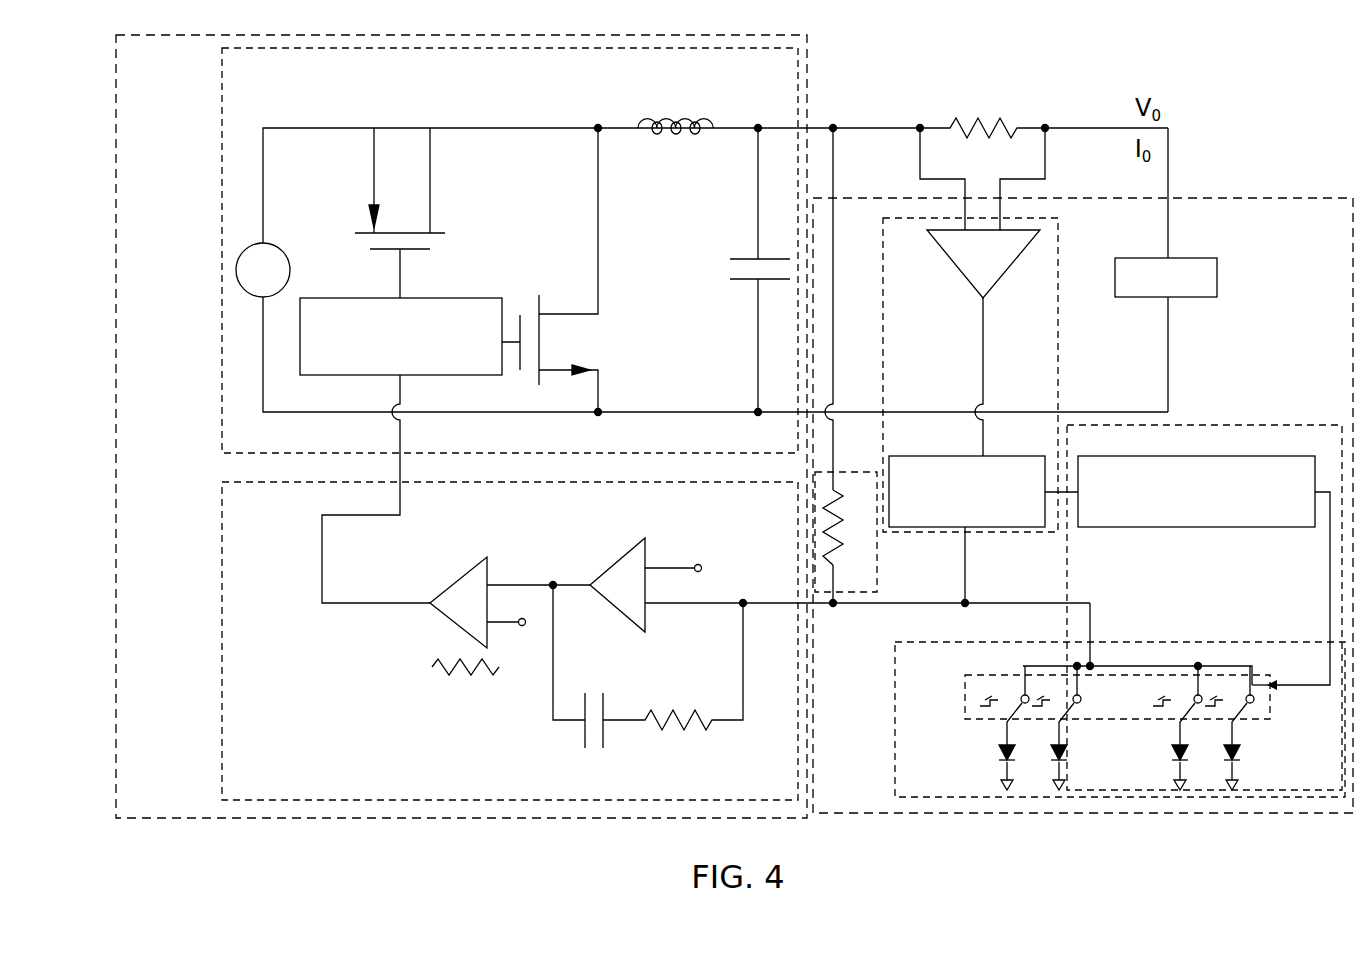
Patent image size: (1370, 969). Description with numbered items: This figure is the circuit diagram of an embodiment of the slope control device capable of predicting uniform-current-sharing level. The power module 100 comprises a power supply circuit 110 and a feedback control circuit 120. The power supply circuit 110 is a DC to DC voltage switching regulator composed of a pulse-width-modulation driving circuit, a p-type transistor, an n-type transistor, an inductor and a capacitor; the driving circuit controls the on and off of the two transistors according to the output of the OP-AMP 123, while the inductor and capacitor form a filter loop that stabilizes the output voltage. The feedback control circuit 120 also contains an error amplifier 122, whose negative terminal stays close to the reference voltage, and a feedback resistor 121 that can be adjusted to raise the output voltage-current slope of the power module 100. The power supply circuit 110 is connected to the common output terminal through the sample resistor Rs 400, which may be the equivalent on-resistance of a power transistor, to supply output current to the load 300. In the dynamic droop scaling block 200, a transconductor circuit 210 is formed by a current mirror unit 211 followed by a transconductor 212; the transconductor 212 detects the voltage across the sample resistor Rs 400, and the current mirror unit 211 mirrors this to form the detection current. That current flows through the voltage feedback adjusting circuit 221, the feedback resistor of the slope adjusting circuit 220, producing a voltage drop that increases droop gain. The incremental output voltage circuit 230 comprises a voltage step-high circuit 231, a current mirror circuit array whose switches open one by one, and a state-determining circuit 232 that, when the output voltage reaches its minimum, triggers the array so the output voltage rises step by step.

The power module 100 is at (114, 126).
The power supply circuit 110 is at (222, 252).
The feedback control circuit 120 is at (222, 636).
The feedback resistor 121 is at (690, 722).
The error amplifier 122 is at (613, 572).
The OP-AMP 123 is at (463, 584).
The dynamic droop scaling block 200 is at (1283, 198).
The transconductor circuit 210 is at (1058, 348).
The current mirror unit 211 is at (927, 455).
The transconductor 212 is at (1005, 265).
The slope adjusting circuit 220 is at (878, 538).
The voltage feedback adjusting circuit 221 is at (843, 513).
The incremental output voltage circuit 230 is at (893, 645).
The voltage step-high circuit 231 is at (963, 686).
The state-determining circuit 232 is at (1180, 452).
The load 300 is at (1195, 258).
The sample resistor Rs 400 is at (968, 128).